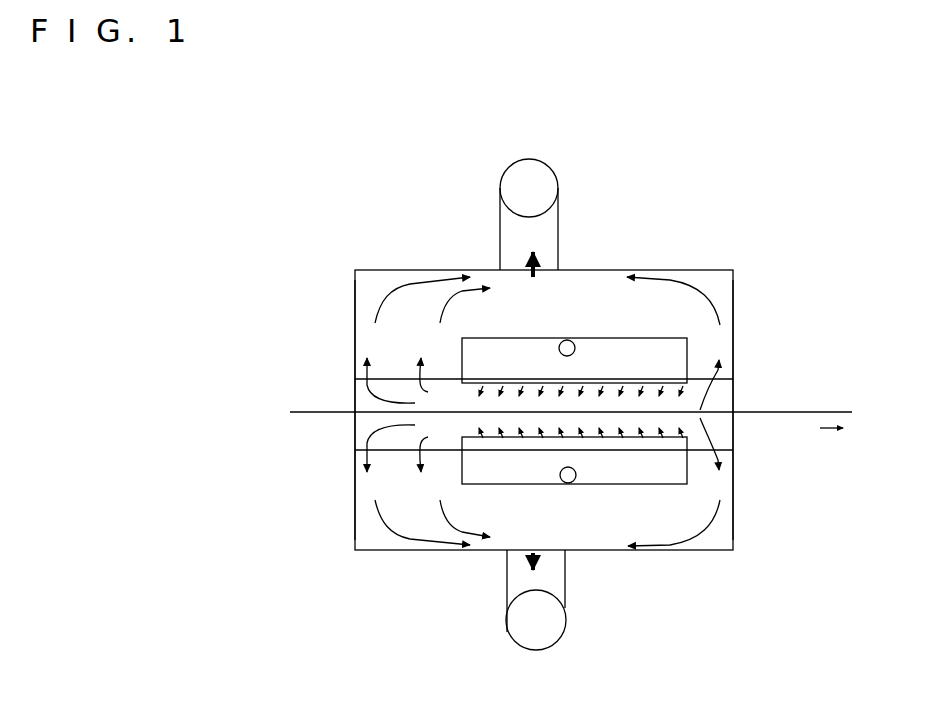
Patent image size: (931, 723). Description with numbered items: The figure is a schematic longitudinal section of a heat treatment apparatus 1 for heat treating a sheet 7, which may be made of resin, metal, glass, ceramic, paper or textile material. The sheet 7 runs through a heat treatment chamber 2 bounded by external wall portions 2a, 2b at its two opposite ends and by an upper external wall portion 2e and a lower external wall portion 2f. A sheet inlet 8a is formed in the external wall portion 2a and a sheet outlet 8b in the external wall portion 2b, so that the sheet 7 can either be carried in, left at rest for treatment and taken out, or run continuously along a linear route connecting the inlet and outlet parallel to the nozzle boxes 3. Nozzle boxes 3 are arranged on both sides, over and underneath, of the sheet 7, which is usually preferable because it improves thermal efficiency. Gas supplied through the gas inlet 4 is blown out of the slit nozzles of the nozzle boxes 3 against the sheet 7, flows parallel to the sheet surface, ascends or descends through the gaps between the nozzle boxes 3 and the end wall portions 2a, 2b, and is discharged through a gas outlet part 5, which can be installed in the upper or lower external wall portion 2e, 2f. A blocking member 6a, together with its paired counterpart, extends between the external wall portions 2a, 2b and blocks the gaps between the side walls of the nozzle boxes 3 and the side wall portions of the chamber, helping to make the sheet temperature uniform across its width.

The heat treatment apparatus 1 is at (737, 251).
The heat treatment chamber 2 is at (708, 540).
The external wall portion 2a is at (355, 310).
The external wall portion 2b is at (733, 313).
The upper external wall portion 2e is at (598, 272).
The lower external wall portion 2f is at (605, 553).
The nozzle box 3 is at (628, 353).
The gas inlet 4 is at (578, 348).
The gas outlet part 5 is at (557, 192).
The blocking member 6a is at (733, 372).
The sheet 7 is at (767, 412).
The sheet inlet 8a is at (347, 411).
The sheet outlet 8b is at (735, 415).